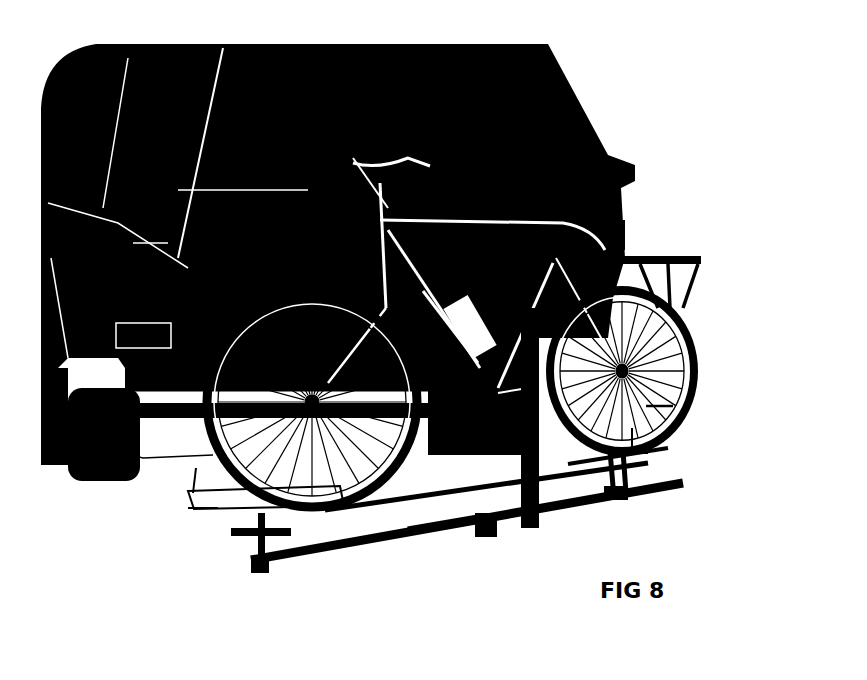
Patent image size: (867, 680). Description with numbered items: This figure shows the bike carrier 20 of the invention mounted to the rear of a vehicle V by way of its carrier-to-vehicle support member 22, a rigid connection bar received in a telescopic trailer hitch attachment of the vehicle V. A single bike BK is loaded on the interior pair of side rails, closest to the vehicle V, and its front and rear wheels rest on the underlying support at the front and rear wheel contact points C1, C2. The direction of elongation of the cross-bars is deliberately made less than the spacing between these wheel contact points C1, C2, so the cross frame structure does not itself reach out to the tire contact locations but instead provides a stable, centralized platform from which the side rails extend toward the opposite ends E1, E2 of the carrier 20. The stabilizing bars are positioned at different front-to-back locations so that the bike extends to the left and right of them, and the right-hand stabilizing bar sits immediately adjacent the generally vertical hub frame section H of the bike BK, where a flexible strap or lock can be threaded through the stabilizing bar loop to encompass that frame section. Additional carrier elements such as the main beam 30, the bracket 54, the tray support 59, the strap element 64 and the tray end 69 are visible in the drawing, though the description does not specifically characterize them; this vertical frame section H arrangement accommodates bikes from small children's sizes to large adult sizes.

The vehicle V is at (592, 108).
The bicycle BK is at (630, 153).
The hub frame section H is at (616, 220).
The bike carrier 20 is at (680, 477).
The carrier-to-vehicle support member 22 is at (477, 523).
The main support beam 30 is at (453, 517).
The wheel retaining bracket 54 is at (667, 430).
The wheel tray support 59 is at (192, 493).
The wheel strap 64 is at (684, 403).
The wheel tray end 69 is at (187, 460).
The front wheel contact point C1 is at (297, 550).
The rear wheel contact point C2 is at (603, 493).
The first end of rack E1 is at (198, 447).
The second end of rack E2 is at (694, 330).